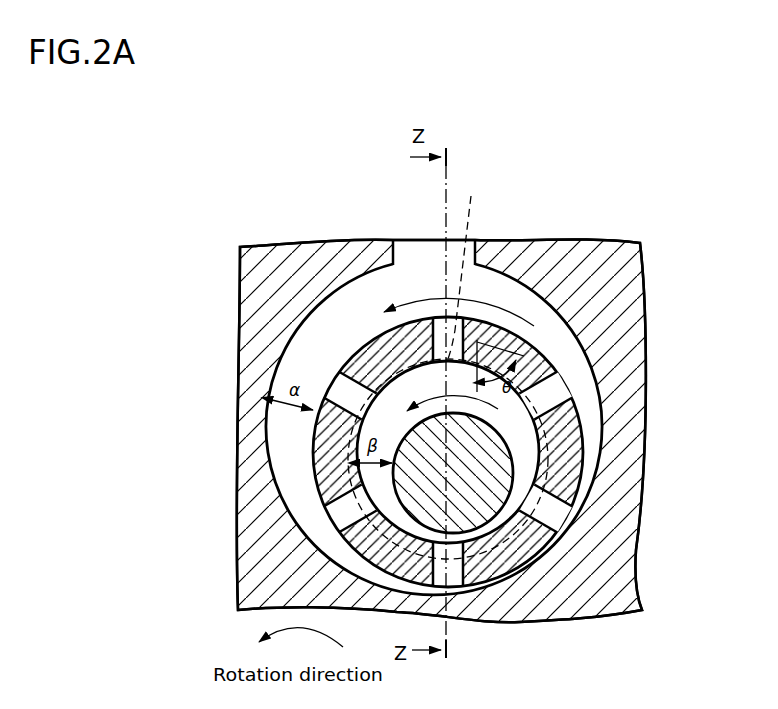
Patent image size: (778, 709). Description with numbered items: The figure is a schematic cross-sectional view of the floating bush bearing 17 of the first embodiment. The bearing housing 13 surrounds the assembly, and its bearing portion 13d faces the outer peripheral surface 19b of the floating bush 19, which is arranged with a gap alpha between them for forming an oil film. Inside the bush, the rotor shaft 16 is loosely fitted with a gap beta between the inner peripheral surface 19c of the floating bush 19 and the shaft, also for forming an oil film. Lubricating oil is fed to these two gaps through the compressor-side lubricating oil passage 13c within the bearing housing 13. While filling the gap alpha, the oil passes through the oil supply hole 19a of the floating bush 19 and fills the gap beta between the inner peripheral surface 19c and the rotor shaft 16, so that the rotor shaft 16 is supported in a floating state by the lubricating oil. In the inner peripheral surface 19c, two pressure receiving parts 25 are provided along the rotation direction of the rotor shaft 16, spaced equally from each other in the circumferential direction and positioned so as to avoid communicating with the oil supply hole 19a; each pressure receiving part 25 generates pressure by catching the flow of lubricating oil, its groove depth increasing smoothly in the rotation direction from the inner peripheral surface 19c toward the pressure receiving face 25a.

The bearing housing 13 is at (614, 303).
The compressor-side lubricating oil passage 13c is at (433, 257).
The bearing portion 13d is at (292, 513).
The rotor shaft 16 is at (484, 437).
The floating bush bearing 17 is at (525, 168).
The floating bush 19 is at (377, 353).
The oil supply hole 19a is at (535, 383).
The outer peripheral surface 19b is at (548, 352).
The inner peripheral surface 19c is at (563, 507).
The pressure receiving part 25 is at (565, 462).
The pressure receiving face 25a is at (471, 273).